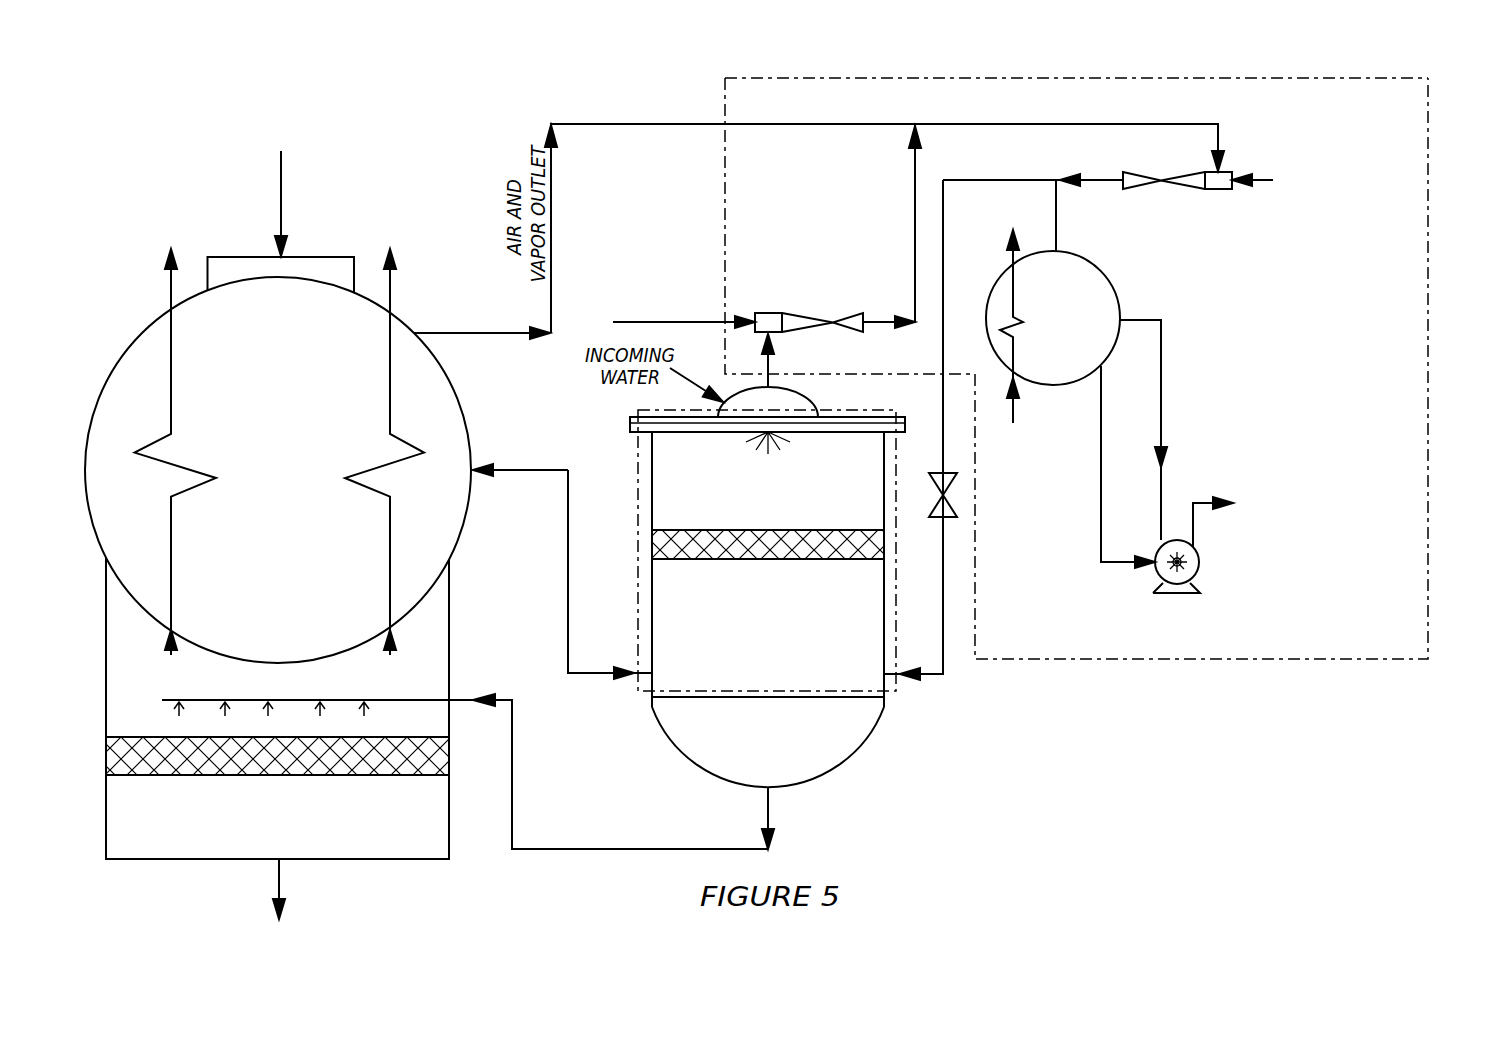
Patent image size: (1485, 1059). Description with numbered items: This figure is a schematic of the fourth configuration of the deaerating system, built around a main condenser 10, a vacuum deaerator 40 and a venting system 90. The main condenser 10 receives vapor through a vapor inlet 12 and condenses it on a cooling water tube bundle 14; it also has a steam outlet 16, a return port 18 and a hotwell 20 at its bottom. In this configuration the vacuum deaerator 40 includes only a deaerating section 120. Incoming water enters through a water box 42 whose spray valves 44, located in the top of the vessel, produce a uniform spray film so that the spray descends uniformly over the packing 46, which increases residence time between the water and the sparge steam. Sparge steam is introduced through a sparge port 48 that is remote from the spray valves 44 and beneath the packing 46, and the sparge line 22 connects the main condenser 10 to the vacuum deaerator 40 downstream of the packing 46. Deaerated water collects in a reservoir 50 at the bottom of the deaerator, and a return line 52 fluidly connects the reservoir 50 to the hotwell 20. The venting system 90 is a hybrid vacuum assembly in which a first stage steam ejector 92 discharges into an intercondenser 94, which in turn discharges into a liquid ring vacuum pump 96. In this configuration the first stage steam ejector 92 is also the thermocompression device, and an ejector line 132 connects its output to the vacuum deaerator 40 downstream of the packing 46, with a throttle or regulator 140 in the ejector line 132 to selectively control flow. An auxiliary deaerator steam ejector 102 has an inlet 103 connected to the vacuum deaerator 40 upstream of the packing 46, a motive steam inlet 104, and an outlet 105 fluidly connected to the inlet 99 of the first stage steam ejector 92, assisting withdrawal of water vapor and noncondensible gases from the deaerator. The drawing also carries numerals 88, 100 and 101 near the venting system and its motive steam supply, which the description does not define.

The main condenser 10 is at (129, 346).
The vapor inlet 12 is at (282, 254).
The cooling water tube bundle 14 is at (158, 461).
The steam outlet 16 is at (474, 474).
The return port 18 is at (449, 700).
The hotwell 20 is at (160, 802).
The sparge line 22 is at (567, 576).
The vacuum deaerator 40 is at (917, 713).
The water box 42 is at (810, 398).
The spray valves 44 is at (788, 438).
The packing 46 is at (652, 548).
The sparge port 48 is at (652, 676).
The reservoir 50 is at (858, 752).
The return line 52 is at (597, 850).
The vacuum system enclosure 88 is at (1253, 77).
The venting system 90 is at (1158, 95).
The first stage steam ejector 92 is at (1197, 182).
The intercondenser 94 is at (1115, 293).
The liquid ring vacuum pump 96 is at (1202, 570).
The inlet of first stage steam ejector 99 is at (1222, 170).
The motive steam inlet 100 is at (1234, 184).
The ejector discharge 101 is at (1125, 170).
The auxiliary deaerator steam ejector 102 is at (800, 313).
The inlet 103 is at (777, 332).
The motive steam inlet 104 is at (753, 315).
The outlet 105 is at (863, 330).
The deaerating section 120 is at (640, 495).
The ejector line 132 is at (944, 615).
The throttle or regulator 140 is at (948, 490).